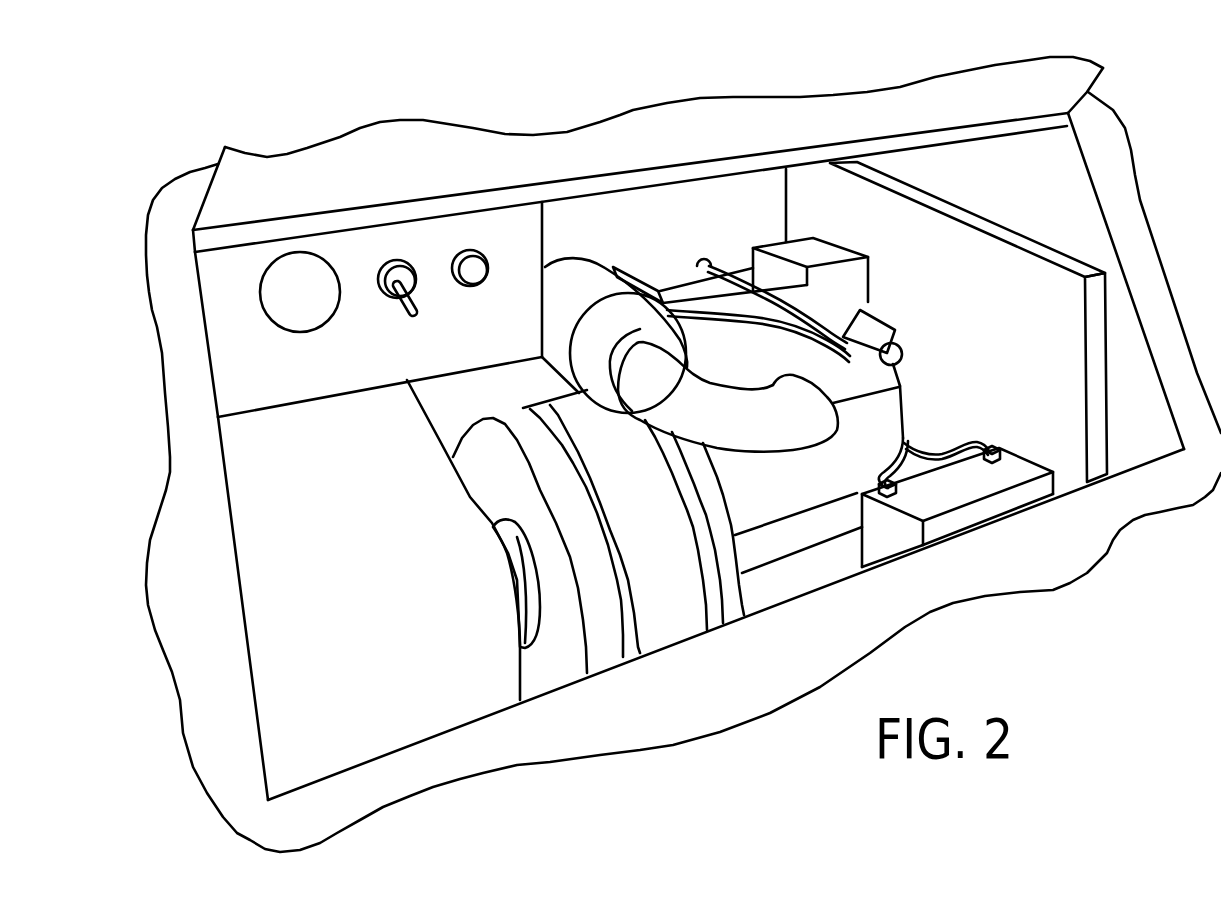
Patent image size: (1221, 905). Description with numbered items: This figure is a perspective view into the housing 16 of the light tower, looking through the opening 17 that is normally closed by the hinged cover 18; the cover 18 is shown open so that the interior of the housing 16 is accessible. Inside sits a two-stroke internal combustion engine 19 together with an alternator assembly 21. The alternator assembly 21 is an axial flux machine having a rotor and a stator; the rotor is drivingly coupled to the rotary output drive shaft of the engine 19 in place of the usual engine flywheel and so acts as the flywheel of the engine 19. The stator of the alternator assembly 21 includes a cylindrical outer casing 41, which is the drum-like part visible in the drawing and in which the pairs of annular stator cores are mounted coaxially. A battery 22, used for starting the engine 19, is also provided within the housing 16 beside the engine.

The housing 16 is at (1118, 529).
The opening 17 is at (1098, 194).
The hinged cover 18 is at (945, 72).
The two-stroke internal combustion engine 19 is at (905, 407).
The alternator assembly 21 is at (671, 614).
The battery 22 is at (972, 492).
The cylindrical outer casing 41 is at (613, 473).